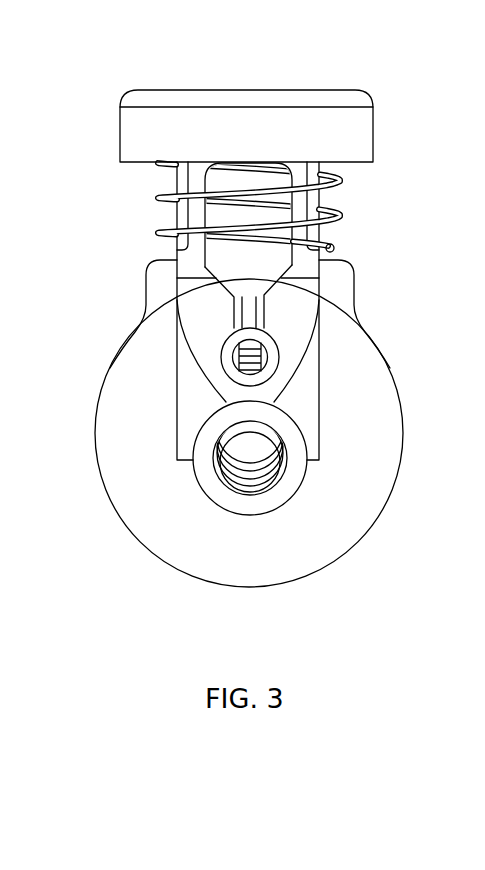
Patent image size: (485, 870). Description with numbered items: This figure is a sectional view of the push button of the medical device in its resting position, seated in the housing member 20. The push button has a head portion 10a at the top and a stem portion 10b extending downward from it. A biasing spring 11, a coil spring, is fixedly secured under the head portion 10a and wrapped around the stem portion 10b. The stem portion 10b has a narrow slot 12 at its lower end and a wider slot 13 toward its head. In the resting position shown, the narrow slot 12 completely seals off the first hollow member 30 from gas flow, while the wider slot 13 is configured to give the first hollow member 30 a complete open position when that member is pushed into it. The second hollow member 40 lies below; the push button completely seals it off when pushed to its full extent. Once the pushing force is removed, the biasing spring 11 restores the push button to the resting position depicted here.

The head portion 10a is at (312, 118).
The stem portion 10b is at (175, 212).
The biasing spring 11 is at (340, 181).
The narrow slot 12 is at (233, 318).
The wider slot 13 is at (265, 262).
The housing member 20 is at (140, 542).
The first hollow member 30 is at (278, 352).
The second hollow member 40 is at (307, 477).